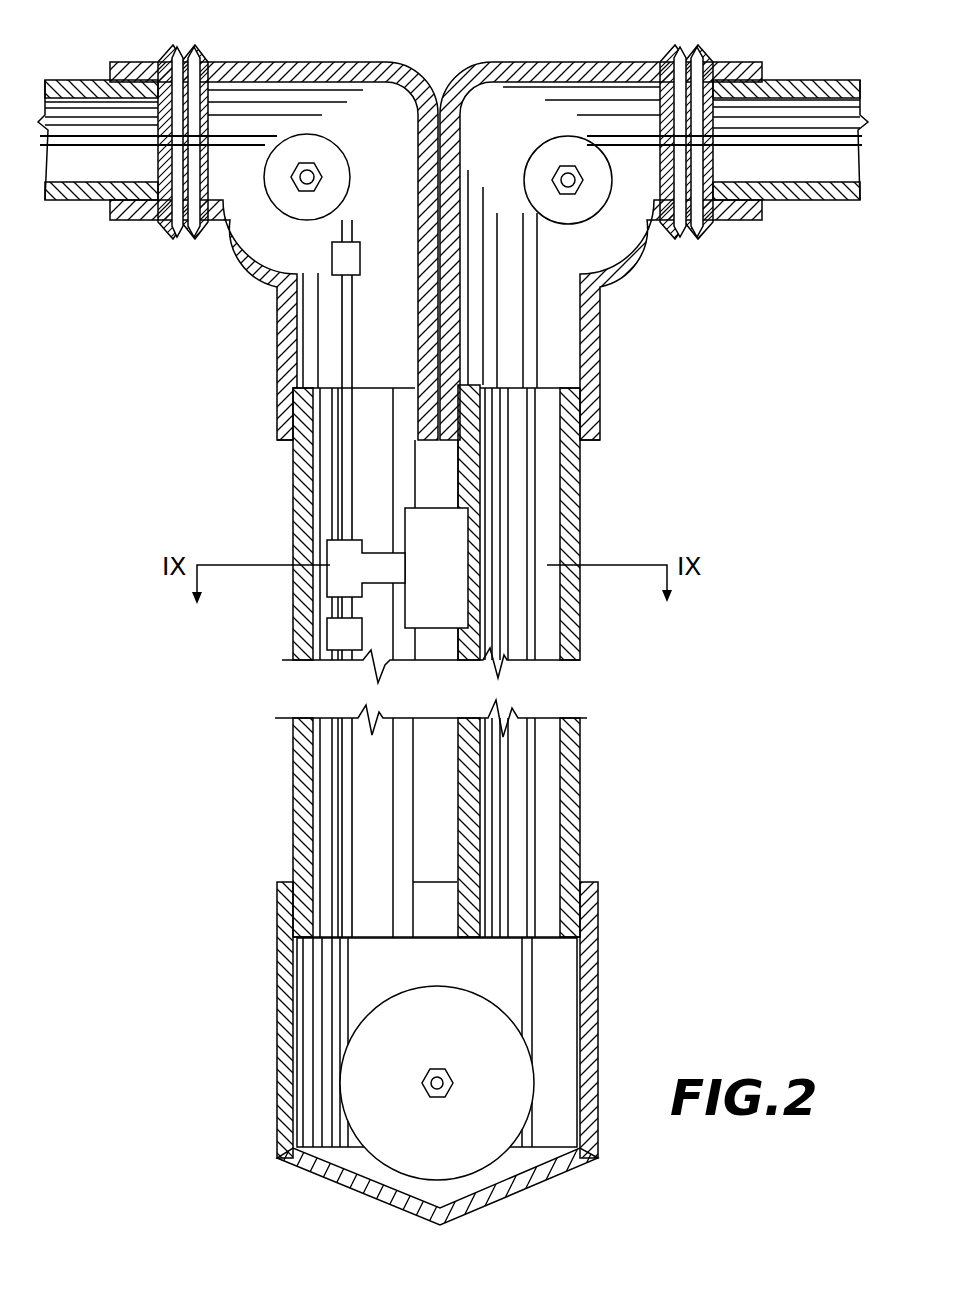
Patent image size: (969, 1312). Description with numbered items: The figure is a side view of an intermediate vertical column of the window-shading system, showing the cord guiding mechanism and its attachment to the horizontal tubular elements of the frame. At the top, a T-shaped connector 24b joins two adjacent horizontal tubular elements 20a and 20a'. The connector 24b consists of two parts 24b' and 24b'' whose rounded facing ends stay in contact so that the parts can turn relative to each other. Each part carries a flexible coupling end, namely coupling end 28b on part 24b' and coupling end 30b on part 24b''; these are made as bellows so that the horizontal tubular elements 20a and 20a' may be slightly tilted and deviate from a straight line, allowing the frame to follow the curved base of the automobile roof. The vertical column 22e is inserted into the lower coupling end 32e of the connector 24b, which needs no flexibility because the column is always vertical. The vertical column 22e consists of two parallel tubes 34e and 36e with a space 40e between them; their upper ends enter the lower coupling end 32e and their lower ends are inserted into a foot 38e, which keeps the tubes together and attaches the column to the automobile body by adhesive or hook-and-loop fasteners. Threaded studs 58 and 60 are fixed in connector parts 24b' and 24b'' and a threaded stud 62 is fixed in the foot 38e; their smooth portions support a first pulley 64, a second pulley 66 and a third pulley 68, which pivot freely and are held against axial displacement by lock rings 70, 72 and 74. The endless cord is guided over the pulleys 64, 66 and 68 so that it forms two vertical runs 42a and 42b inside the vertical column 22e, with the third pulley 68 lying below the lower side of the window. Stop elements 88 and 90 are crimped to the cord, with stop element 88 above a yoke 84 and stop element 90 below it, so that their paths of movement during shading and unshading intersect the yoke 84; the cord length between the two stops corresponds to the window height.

The horizontal tubular element 20a is at (200, 107).
The horizontal tubular element 20a' is at (685, 107).
The flexible coupling end 28b is at (190, 50).
The flexible coupling end 30b is at (685, 37).
The T-shaped connector 24b is at (436, 227).
The connector part 24b' is at (203, 320).
The connector part 24b'' is at (671, 320).
The threaded stud 58 is at (300, 196).
The first pulley 64 is at (277, 185).
The lock ring 70 is at (318, 168).
The threaded stud 60 is at (590, 205).
The second pulley 66 is at (598, 192).
The lock ring 72 is at (557, 172).
The vertical cord run 42a is at (343, 473).
The vertical cord run 42b is at (530, 455).
The stop element 88 is at (360, 258).
The yoke 84 is at (327, 552).
The stop element 90 is at (327, 637).
The vertical column 22e is at (282, 500).
The lower coupling end 32e is at (614, 390).
The tube 34e is at (297, 597).
The tube 36e is at (580, 633).
The space 40e is at (445, 748).
The foot 38e is at (610, 942).
The third pulley 68 is at (455, 1144).
The threaded stud 62 is at (445, 1071).
The lock ring 74 is at (428, 1075).